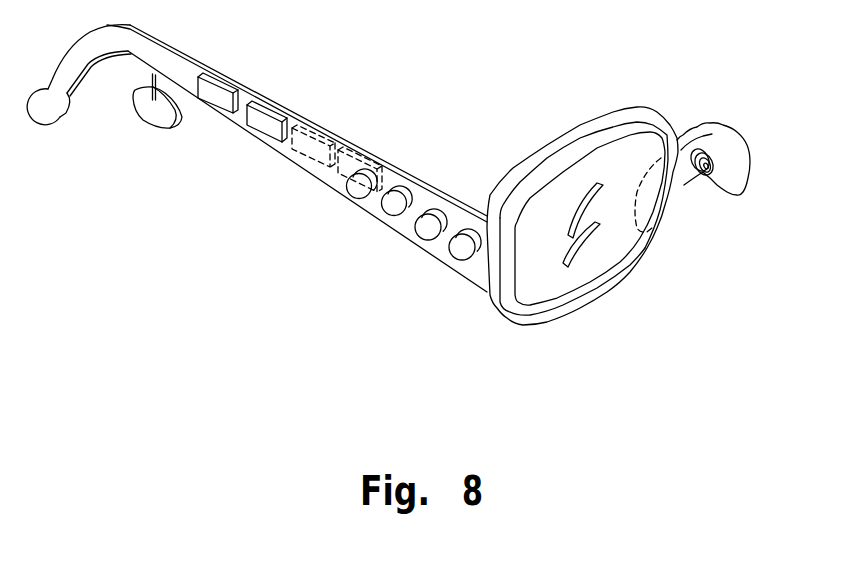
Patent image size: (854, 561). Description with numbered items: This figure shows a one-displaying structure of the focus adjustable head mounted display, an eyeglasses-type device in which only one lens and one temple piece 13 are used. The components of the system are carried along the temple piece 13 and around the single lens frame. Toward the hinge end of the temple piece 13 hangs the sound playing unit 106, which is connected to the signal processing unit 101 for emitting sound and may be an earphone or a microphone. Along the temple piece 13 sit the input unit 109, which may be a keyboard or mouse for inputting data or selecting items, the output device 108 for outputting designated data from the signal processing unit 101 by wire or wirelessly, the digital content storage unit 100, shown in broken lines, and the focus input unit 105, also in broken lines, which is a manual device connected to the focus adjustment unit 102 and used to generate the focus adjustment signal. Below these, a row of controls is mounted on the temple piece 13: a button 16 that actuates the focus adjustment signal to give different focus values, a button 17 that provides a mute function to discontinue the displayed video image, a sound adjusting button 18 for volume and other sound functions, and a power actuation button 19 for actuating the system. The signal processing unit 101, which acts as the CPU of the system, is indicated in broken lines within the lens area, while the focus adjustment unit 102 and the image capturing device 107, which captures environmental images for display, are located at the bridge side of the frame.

The temple piece 13 is at (238, 123).
The button 16 is at (359, 186).
The button 17 is at (392, 205).
The sound adjusting button 18 is at (427, 229).
The power actuation button 19 is at (461, 250).
The digital content storage unit 100 is at (308, 123).
The signal processing unit 101 is at (643, 212).
The focus adjustment unit 102 is at (704, 180).
The focus input unit 105 is at (352, 143).
The sound playing unit 106 is at (147, 115).
The image capturing device 107 is at (713, 167).
The output device 108 is at (260, 120).
The input unit 109 is at (212, 93).